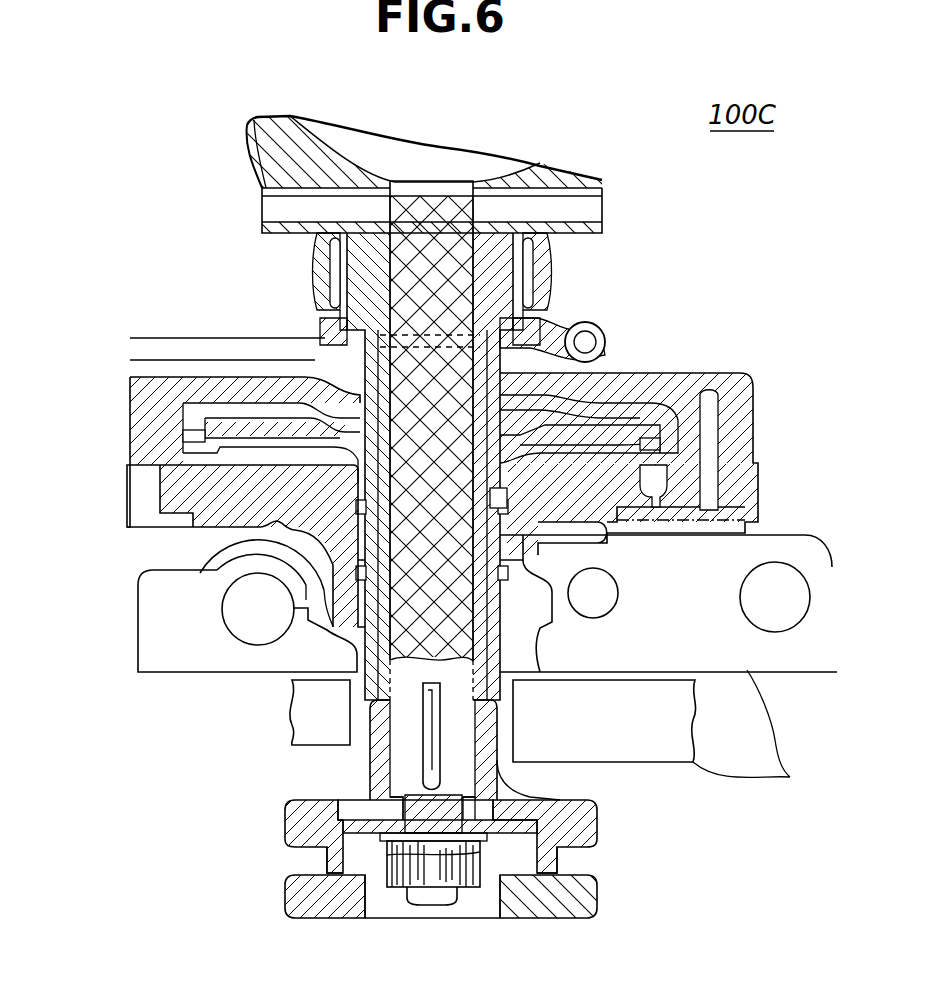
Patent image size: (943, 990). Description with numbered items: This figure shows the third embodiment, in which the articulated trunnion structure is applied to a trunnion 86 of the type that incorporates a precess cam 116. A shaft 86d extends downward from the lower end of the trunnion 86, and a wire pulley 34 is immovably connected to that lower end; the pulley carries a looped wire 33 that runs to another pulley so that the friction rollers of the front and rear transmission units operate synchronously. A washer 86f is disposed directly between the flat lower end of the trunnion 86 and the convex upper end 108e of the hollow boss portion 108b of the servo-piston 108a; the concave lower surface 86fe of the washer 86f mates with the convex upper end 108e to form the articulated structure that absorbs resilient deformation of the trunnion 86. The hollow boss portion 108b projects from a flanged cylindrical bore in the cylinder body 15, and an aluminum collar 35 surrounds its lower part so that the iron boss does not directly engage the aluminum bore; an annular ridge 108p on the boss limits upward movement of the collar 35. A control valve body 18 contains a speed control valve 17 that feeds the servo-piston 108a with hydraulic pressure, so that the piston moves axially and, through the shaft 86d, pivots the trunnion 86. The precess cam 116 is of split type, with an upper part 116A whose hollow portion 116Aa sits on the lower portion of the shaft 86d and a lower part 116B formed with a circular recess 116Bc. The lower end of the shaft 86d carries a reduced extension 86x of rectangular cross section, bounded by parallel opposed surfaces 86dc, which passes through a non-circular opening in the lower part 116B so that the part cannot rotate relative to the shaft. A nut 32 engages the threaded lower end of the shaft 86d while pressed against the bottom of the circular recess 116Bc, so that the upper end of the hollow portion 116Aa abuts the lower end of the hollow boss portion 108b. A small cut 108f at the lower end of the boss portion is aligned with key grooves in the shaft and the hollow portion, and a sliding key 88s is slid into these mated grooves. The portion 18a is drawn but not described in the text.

The trunnion 86 is at (246, 132).
The shaft 86d is at (443, 262).
The parallel opposed surfaces 86dc is at (440, 800).
The washer 86f is at (605, 340).
The lower surface of washer 86fe is at (335, 347).
The reduced extension 86x is at (456, 902).
The servo-piston 108a is at (612, 410).
The hollow boss portion 108b is at (515, 530).
The upper end of hollow boss portion 108e is at (333, 318).
The small cut 108f is at (505, 735).
The annular ridge 108p is at (335, 593).
The cylinder body 15 is at (760, 492).
The speed control valve 17 is at (790, 545).
The control valve body 18 is at (790, 777).
The frame shaft portion 18a is at (497, 745).
The nut 32 is at (397, 887).
The looped wire 33 is at (166, 338).
The wire pulley 34 is at (560, 333).
The aluminum collar 35 is at (500, 640).
The sliding key 88s is at (480, 732).
The precess cam 116 is at (598, 887).
The upper part of precess cam 116A is at (600, 840).
The hollow portion 116Aa is at (560, 812).
The lower part of precess cam 116B is at (560, 918).
The circular recess 116Bc is at (497, 882).